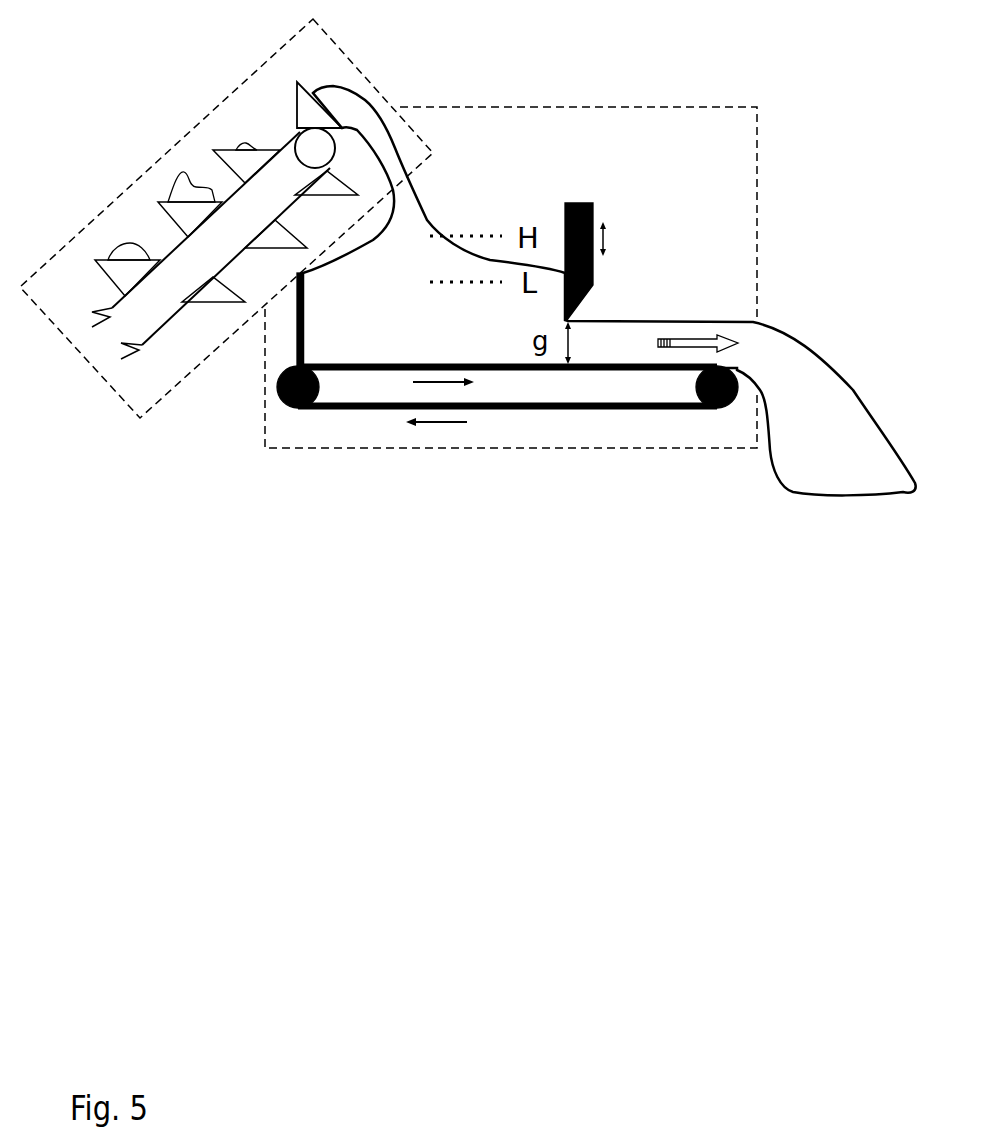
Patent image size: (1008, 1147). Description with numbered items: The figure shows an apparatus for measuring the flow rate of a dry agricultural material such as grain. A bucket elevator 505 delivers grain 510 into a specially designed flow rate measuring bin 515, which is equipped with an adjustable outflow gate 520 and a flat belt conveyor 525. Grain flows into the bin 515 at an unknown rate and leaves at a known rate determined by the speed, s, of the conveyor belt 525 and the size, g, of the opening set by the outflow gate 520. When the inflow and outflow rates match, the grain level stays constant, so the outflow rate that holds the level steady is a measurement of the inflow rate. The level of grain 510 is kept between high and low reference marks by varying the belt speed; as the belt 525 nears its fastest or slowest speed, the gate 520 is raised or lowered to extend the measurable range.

The bucket elevator 505 is at (153, 162).
The grain 510 is at (350, 103).
The flow rate measuring bin 515 is at (598, 107).
The adjustable outflow gate 520 is at (588, 202).
The flat belt conveyor 525 is at (570, 410).